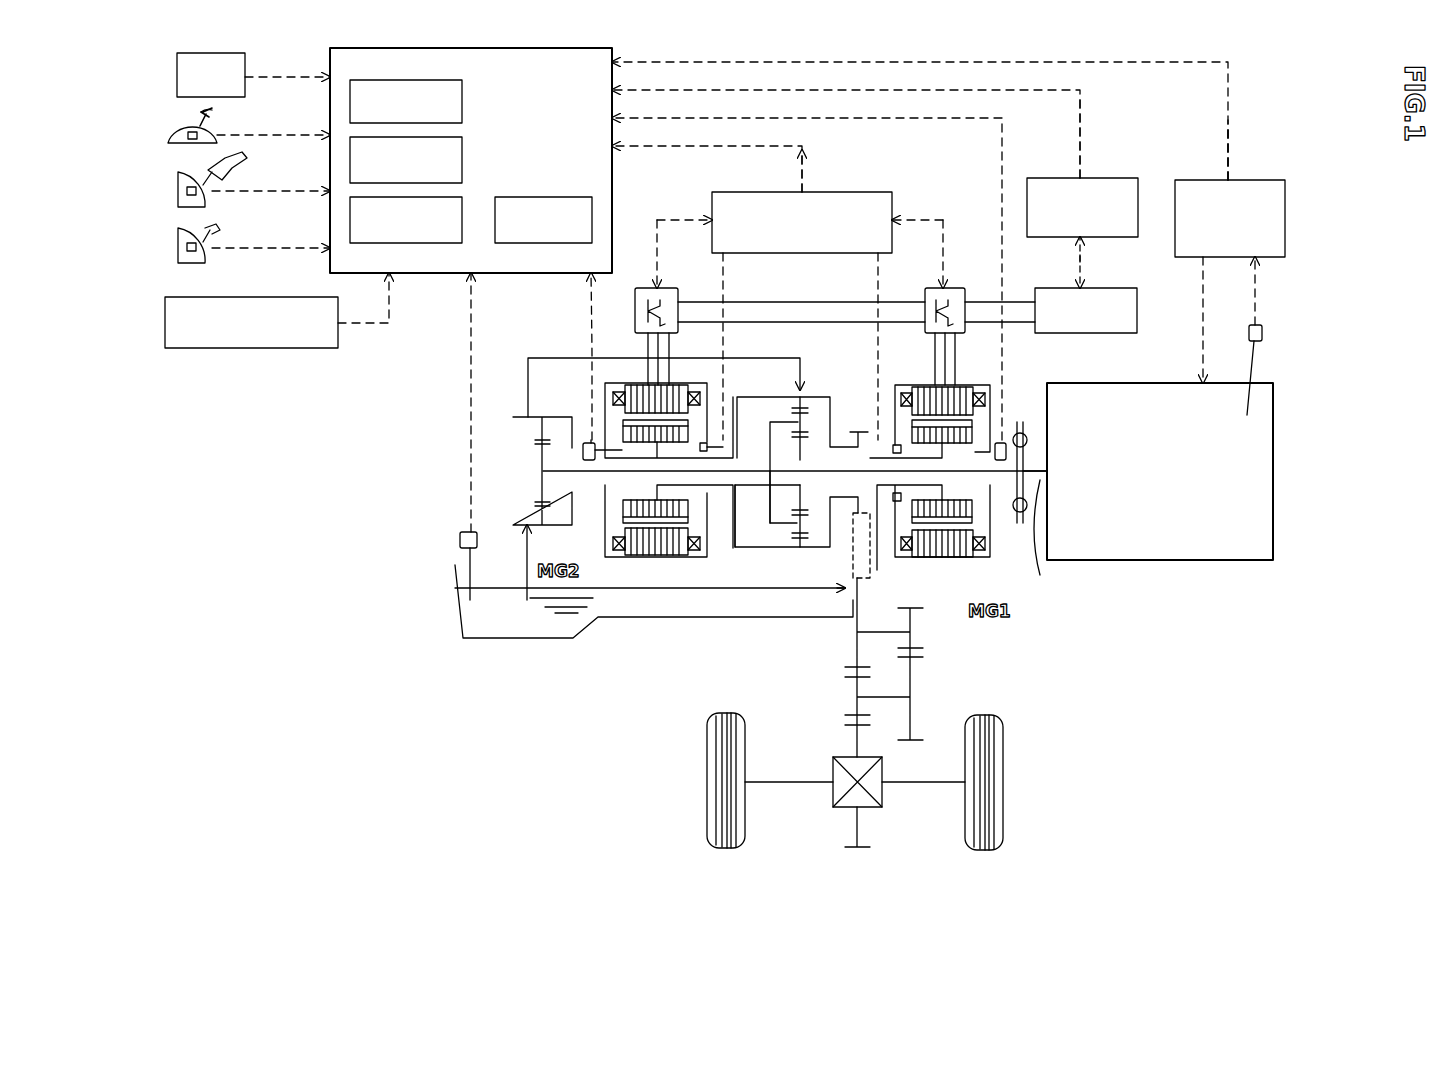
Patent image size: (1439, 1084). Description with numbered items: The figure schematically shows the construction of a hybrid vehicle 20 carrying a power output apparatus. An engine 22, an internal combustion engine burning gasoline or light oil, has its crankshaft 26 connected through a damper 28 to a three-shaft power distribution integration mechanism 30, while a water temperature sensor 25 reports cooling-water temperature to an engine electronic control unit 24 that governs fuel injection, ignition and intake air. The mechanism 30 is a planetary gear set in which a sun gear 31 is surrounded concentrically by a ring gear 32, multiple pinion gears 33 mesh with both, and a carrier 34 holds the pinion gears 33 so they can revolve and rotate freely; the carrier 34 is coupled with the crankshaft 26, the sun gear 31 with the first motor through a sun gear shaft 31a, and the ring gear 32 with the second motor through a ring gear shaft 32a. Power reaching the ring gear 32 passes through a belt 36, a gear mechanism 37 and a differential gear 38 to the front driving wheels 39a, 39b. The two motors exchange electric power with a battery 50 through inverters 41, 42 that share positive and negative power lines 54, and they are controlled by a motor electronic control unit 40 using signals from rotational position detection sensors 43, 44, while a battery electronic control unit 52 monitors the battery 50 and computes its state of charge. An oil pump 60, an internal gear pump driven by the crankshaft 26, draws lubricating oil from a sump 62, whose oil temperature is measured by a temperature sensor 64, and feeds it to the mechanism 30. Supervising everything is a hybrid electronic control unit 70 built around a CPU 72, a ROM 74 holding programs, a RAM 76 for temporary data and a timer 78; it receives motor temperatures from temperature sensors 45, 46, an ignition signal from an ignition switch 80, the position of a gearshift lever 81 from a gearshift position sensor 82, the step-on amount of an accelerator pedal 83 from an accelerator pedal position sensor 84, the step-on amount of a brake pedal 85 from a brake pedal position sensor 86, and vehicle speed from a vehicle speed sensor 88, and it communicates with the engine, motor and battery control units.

The hybrid vehicle 20 is at (1275, 66).
The engine 22 is at (1273, 487).
The engine electronic control unit 24 is at (1270, 180).
The water temperature sensor 25 is at (1262, 333).
The crankshaft 26 is at (1051, 545).
The damper 28 is at (1015, 510).
The power distribution integration mechanism 30 is at (835, 358).
The sun gear 31 is at (797, 495).
The sun gear shaft 31a is at (890, 557).
The ring gear 32 is at (800, 397).
The ring gear shaft 32a is at (710, 528).
The pinion gears 33 is at (805, 428).
The carrier 34 is at (770, 452).
The belt 36 is at (873, 573).
The gear mechanism 37 is at (968, 684).
The differential gear 38 is at (882, 797).
The front driving wheel 39a is at (745, 825).
The front driving wheel 39b is at (1003, 825).
The motor electronic control unit 40 is at (845, 192).
The inverter 41 is at (648, 288).
The inverter 42 is at (955, 288).
The rotational position detection sensor 43 is at (897, 445).
The rotational position detection sensor 44 is at (703, 443).
The temperature sensor 45 is at (1001, 443).
The temperature sensor 46 is at (585, 443).
The battery 50 is at (1137, 325).
The battery electronic control unit 52 is at (1105, 178).
The power lines 54 is at (772, 322).
The oil pump 60 is at (513, 430).
The sump 62 is at (716, 617).
The temperature sensor 64 is at (460, 540).
The hybrid electronic control unit 70 is at (575, 50).
The CPU 72 is at (462, 103).
The ROM 74 is at (462, 153).
The RAM 76 is at (462, 210).
The timer 78 is at (555, 197).
The ignition switch 80 is at (177, 73).
The gearshift lever 81 is at (202, 115).
The gearshift position sensor 82 is at (188, 135).
The accelerator pedal 83 is at (208, 175).
The accelerator pedal position sensor 84 is at (188, 191).
The brake pedal 85 is at (208, 228).
The brake pedal position sensor 86 is at (188, 248).
The vehicle speed sensor 88 is at (165, 336).